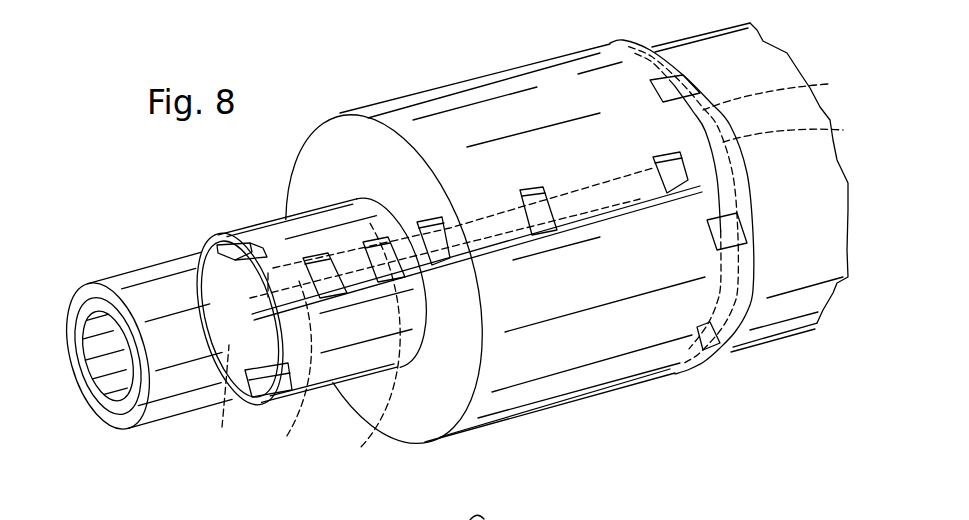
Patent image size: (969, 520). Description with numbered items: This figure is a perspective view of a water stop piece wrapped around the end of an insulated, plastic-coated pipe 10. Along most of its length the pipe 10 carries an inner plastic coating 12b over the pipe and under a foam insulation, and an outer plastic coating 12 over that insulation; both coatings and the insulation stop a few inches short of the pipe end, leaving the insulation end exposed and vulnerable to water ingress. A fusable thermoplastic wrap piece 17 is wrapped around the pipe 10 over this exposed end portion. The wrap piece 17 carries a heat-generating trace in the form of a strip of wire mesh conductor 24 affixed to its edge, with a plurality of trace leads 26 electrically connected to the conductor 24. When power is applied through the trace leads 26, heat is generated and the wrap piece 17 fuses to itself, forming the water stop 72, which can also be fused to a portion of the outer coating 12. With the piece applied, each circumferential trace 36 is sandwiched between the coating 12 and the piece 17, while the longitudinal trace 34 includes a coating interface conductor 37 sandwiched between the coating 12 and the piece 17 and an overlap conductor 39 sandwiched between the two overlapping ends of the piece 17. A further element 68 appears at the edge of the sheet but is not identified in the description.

The pipe 10 is at (84, 380).
The outer plastic coating 12 is at (128, 276).
The inner plastic coating 12b is at (730, 45).
The wrap piece 17 is at (468, 97).
The wire mesh conductor 24 is at (800, 133).
The trace leads 26 is at (357, 439).
The longitudinal trace 34 is at (337, 250).
The circumferential trace 36 is at (783, 90).
The coating interface conductor 37 is at (222, 428).
The overlap conductor 39 is at (297, 431).
The element 68 is at (487, 519).
The water stop 72 is at (232, 233).